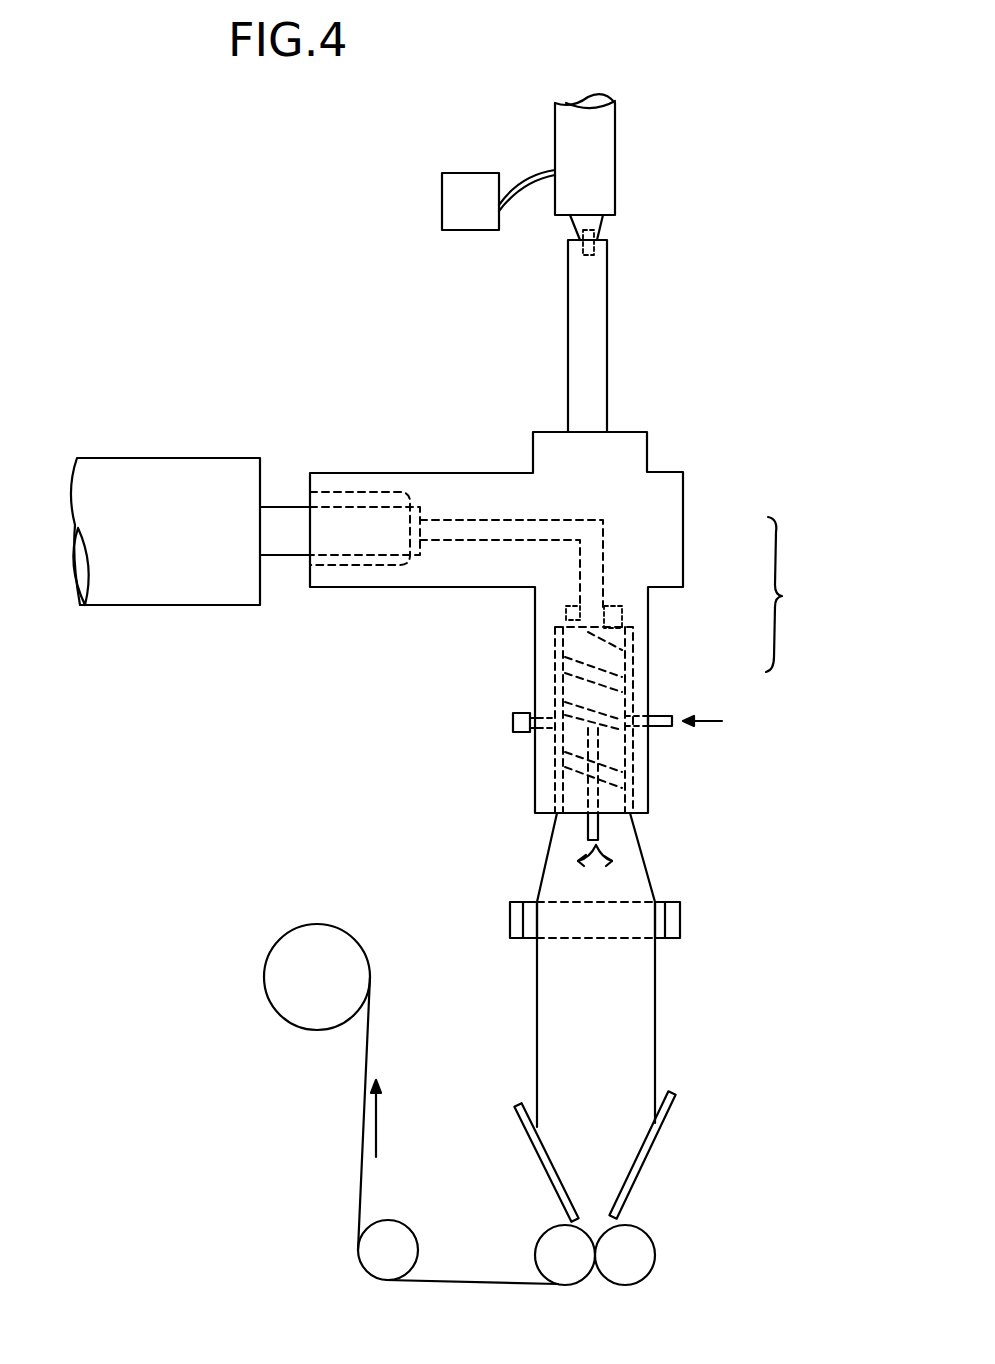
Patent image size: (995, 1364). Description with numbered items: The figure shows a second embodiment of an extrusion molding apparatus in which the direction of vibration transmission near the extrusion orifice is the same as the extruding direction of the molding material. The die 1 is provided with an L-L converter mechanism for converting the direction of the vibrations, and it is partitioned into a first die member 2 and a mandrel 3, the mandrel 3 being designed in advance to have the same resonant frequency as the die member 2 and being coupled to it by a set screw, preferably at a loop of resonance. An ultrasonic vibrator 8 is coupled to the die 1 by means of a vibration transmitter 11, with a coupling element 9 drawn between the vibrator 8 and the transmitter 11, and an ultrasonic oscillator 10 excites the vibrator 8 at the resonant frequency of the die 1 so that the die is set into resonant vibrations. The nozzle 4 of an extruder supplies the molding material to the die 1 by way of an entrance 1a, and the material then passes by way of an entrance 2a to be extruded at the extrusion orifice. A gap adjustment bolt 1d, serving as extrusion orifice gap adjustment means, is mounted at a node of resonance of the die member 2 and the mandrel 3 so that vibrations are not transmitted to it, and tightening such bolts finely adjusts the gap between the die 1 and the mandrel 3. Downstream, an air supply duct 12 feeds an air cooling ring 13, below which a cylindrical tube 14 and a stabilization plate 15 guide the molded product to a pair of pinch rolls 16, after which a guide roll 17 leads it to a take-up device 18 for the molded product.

The die 1 is at (788, 594).
The entrance 1a is at (413, 510).
The gap adjustment bolt 1d is at (513, 723).
The first die member 2 is at (668, 521).
The entrance 2a is at (598, 605).
The mandrel 3 is at (605, 665).
The nozzle 4 is at (285, 545).
The ultrasonic vibrator 8 is at (607, 168).
The feed valve 9 is at (600, 245).
The ultrasonic oscillator 10 is at (463, 223).
The vibration transmitter 11 is at (595, 355).
The air supply duct 12 is at (672, 712).
The air cooling ring 13 is at (672, 920).
The cylindrical tube 14 is at (645, 993).
The stabilization plate 15 is at (655, 1140).
The pair of pinch rolls 16 is at (645, 1260).
The guide roll 17 is at (390, 1233).
The take-up device 18 is at (290, 988).